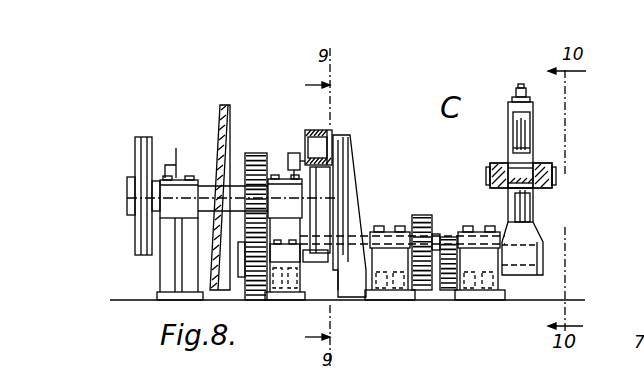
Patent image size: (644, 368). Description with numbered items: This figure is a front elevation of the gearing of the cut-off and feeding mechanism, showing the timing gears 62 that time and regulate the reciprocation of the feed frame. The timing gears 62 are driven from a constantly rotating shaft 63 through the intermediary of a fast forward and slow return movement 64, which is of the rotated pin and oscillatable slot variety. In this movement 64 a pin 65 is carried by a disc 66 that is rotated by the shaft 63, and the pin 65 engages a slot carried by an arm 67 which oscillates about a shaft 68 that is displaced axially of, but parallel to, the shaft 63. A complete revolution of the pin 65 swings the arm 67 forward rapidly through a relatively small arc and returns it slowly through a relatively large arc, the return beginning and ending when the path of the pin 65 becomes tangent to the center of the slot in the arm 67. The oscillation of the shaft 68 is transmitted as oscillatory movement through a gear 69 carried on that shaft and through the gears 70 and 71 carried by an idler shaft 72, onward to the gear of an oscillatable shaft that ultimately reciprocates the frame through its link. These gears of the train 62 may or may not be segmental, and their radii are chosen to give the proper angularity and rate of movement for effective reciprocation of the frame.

The timing gears 62 is at (402, 217).
The constantly rotating shaft 63 is at (275, 177).
The fast forward and slow return movement 64 is at (332, 130).
The pin 65 is at (353, 137).
The disc 66 is at (325, 180).
The arm 67 is at (357, 195).
The shaft 68 is at (381, 228).
The gear 69 is at (424, 290).
The gear 70 is at (430, 292).
The gear 71 is at (455, 232).
The idler shaft 72 is at (486, 300).